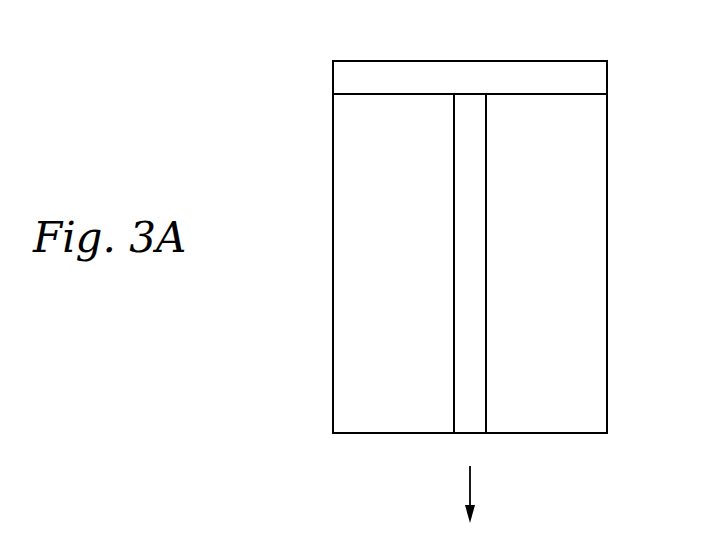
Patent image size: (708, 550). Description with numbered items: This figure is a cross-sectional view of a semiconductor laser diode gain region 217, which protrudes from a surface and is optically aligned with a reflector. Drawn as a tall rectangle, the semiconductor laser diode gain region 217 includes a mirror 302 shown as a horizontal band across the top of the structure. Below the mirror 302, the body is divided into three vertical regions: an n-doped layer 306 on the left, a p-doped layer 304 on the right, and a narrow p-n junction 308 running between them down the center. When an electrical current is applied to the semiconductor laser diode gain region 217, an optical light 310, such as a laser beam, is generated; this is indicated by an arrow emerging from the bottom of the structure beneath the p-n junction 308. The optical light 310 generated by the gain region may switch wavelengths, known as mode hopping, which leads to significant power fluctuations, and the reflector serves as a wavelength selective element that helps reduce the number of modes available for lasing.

The semiconductor laser diode gain region 217 is at (220, 57).
The mirror 302 is at (468, 70).
The p-doped layer 304 is at (601, 347).
The n-doped layer 306 is at (339, 345).
The p-n junction 308 is at (480, 347).
The optical light 310 is at (472, 480).